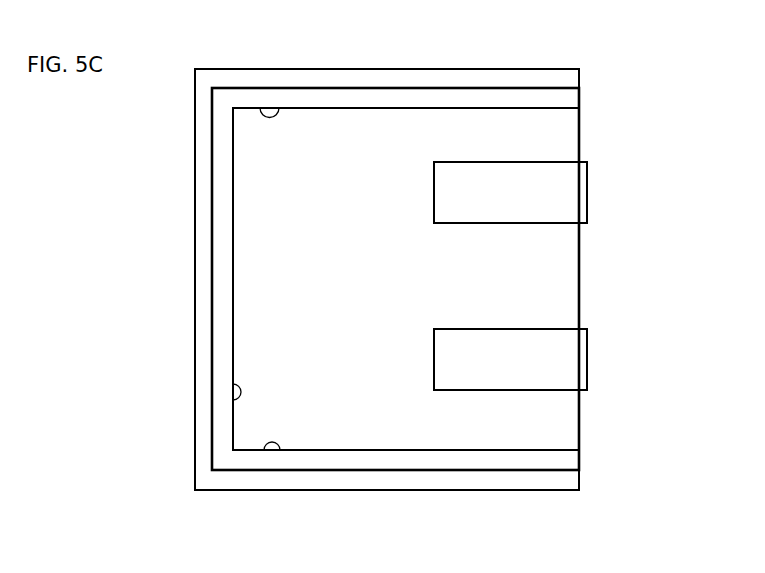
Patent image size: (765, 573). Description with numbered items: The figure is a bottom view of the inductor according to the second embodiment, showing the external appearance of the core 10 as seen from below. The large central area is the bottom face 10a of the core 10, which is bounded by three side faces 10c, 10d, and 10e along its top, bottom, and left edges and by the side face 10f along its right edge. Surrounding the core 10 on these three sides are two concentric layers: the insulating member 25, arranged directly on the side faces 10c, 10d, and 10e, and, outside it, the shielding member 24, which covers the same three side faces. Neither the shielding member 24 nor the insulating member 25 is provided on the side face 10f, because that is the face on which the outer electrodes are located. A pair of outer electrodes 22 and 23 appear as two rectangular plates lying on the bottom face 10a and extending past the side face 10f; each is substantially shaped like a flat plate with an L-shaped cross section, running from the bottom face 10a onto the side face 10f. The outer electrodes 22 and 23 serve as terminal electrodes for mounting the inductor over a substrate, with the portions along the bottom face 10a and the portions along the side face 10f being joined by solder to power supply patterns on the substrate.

The core 10 is at (300, 108).
The bottom face 10a is at (253, 219).
The side face 10c is at (263, 118).
The side face 10d is at (267, 453).
The side face 10e is at (234, 387).
The side face 10f is at (579, 265).
The outer electrode 22 is at (587, 193).
The outer electrode 23 is at (587, 360).
The shielding member 24 is at (404, 69).
The insulating member 25 is at (350, 88).